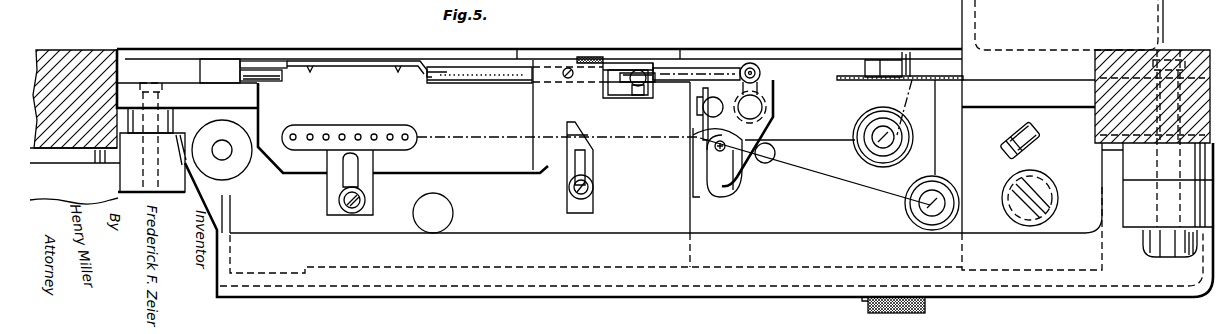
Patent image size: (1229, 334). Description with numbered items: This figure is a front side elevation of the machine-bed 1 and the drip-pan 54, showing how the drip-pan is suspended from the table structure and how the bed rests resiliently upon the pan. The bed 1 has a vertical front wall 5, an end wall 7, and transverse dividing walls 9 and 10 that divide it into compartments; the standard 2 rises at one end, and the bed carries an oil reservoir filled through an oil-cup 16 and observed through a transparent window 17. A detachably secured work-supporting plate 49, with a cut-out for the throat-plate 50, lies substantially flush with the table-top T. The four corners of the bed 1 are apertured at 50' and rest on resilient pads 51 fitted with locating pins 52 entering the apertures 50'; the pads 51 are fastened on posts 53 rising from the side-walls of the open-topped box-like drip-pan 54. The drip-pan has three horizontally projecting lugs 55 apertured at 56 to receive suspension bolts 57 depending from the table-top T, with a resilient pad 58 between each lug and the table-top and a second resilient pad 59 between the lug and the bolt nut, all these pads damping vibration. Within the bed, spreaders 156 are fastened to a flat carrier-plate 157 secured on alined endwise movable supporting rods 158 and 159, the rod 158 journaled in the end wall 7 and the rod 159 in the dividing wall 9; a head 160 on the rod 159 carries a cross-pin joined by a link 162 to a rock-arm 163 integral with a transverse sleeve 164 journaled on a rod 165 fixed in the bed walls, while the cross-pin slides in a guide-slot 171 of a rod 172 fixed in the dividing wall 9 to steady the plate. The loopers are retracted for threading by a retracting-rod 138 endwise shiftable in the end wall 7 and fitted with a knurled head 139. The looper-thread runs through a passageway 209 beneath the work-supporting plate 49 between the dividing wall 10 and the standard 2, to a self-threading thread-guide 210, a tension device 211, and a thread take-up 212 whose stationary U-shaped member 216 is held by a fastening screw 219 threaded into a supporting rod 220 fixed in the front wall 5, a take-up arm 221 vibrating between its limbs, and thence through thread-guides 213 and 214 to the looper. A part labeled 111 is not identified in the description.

The bed 1 is at (519, 214).
The standard 2 is at (965, 13).
The front wall 5 is at (787, 83).
The end wall 7 is at (220, 65).
The dividing wall 9 is at (543, 107).
The dividing wall 10 is at (883, 60).
The oil-cup 16 is at (1035, 138).
The transparent window 17 is at (1055, 182).
The work-supporting plate 49 is at (622, 52).
The throat-plate 50 is at (327, 36).
The apertures 50' is at (667, 97).
The resilient pads 51 is at (168, 115).
The locating pins 52 is at (147, 83).
The posts 53 is at (178, 140).
The drip-pan 54 is at (753, 290).
The lugs 55 is at (93, 186).
The apertures 56 is at (1130, 205).
The suspension bolts 57 is at (1150, 232).
The resilient pad 58 is at (56, 153).
The second resilient pad 59 is at (50, 198).
The wall 111 is at (538, 58).
The retracting-rod 138 is at (233, 156).
The knurled head 139 is at (230, 173).
The spreader 156 is at (311, 73).
The carrier-plate 157 is at (358, 62).
The supporting rod 158 is at (258, 70).
The supporting rod 159 is at (482, 70).
The head 160 is at (645, 93).
The link 162 is at (692, 70).
The rock-arm 163 is at (762, 85).
The transverse sleeve 164 is at (768, 100).
The rod 165 is at (757, 108).
The guide-slot 171 is at (626, 83).
The rod 172 is at (612, 70).
The passageway 209 is at (923, 65).
The thread-guide 210 is at (905, 81).
The tension device 211 is at (915, 185).
The thread take-up 212 is at (693, 160).
The thread-guide 213 is at (575, 158).
The thread-guide 214 is at (360, 128).
The U-shaped member 216 is at (734, 187).
The fastening screw 219 is at (697, 104).
The supporting rod 220 is at (712, 110).
The take-up arm 221 is at (724, 150).
The table-top T is at (78, 62).